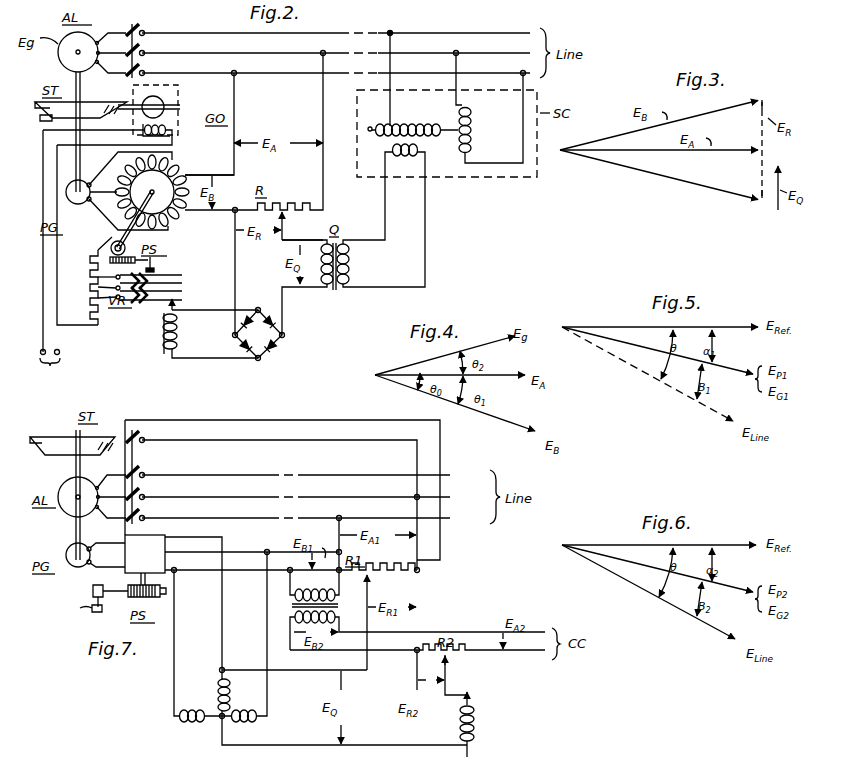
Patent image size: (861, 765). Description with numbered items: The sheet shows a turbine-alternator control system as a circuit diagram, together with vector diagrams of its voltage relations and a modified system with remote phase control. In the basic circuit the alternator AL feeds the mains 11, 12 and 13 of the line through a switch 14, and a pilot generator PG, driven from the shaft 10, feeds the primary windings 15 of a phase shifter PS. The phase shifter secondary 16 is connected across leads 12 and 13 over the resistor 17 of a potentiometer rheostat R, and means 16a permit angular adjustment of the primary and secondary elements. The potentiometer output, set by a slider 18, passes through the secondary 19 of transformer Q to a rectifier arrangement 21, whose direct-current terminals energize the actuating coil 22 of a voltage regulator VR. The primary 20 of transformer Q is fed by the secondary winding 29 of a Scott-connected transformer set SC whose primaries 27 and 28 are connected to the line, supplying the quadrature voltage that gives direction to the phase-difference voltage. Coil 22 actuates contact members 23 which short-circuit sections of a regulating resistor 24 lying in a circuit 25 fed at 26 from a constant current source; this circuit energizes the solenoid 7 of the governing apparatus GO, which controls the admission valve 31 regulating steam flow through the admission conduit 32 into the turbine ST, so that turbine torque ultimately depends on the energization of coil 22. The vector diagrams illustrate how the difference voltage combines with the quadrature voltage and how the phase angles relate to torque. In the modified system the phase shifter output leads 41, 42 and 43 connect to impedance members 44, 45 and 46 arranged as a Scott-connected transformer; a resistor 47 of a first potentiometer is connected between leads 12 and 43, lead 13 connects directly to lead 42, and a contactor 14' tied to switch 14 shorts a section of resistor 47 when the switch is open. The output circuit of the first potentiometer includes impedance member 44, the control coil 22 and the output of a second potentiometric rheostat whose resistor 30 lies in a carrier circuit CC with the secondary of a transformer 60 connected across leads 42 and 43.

In FIG. 2, the solenoid 7 is at (172, 130).
In FIG. 2, the shaft 10 is at (81, 84).
In FIG. 7, the shaft 10 is at (75, 470).
In FIG. 2, the main 11 is at (173, 28).
In FIG. 7, the main 11 is at (172, 477).
In FIG. 2, the main 12 is at (174, 48).
In FIG. 7, the main 12 is at (174, 496).
In FIG. 2, the main 13 is at (174, 68).
In FIG. 7, the main 13 is at (174, 518).
In FIG. 2, the switch 14 is at (124, 43).
In FIG. 7, the switch 14 is at (147, 477).
In FIG. 7, the contactor 14' is at (282, 495).
In FIG. 2, the primary windings 15 is at (121, 193).
In FIG. 2, the secondary 16 is at (155, 193).
In FIG. 2, the adjusting means 16a is at (150, 264).
In FIG. 2, the resistor 17 is at (280, 205).
In FIG. 2, the slider 18 is at (284, 233).
In FIG. 2, the secondary 19 is at (328, 288).
In FIG. 2, the primary 20 is at (350, 266).
In FIG. 2, the rectifier arrangement 21 is at (284, 337).
In FIG. 2, the actuating coil 22 is at (179, 334).
In FIG. 7, the actuating coil 22 is at (475, 718).
In FIG. 2, the contact members 23 is at (158, 272).
In FIG. 2, the regulating resistor 24 is at (96, 277).
In FIG. 2, the circuit 25 is at (44, 290).
In FIG. 2, the feed point 26 is at (50, 368).
In FIG. 2, the primary 27 is at (472, 117).
In FIG. 2, the primary 28 is at (419, 122).
In FIG. 2, the secondary winding 29 is at (405, 159).
In FIG. 7, the resistor 30 is at (470, 658).
In FIG. 2, the admission valve 31 is at (165, 99).
In FIG. 2, the admission conduit 32 is at (145, 116).
In FIG. 7, the output lead 41 is at (197, 537).
In FIG. 7, the output lead 42 is at (198, 552).
In FIG. 7, the output lead 43 is at (198, 569).
In FIG. 7, the impedance member 44 is at (227, 695).
In FIG. 7, the impedance member 45 is at (254, 723).
In FIG. 7, the impedance member 46 is at (193, 723).
In FIG. 7, the resistor 47 is at (372, 568).
In FIG. 7, the transformer 60 is at (289, 616).